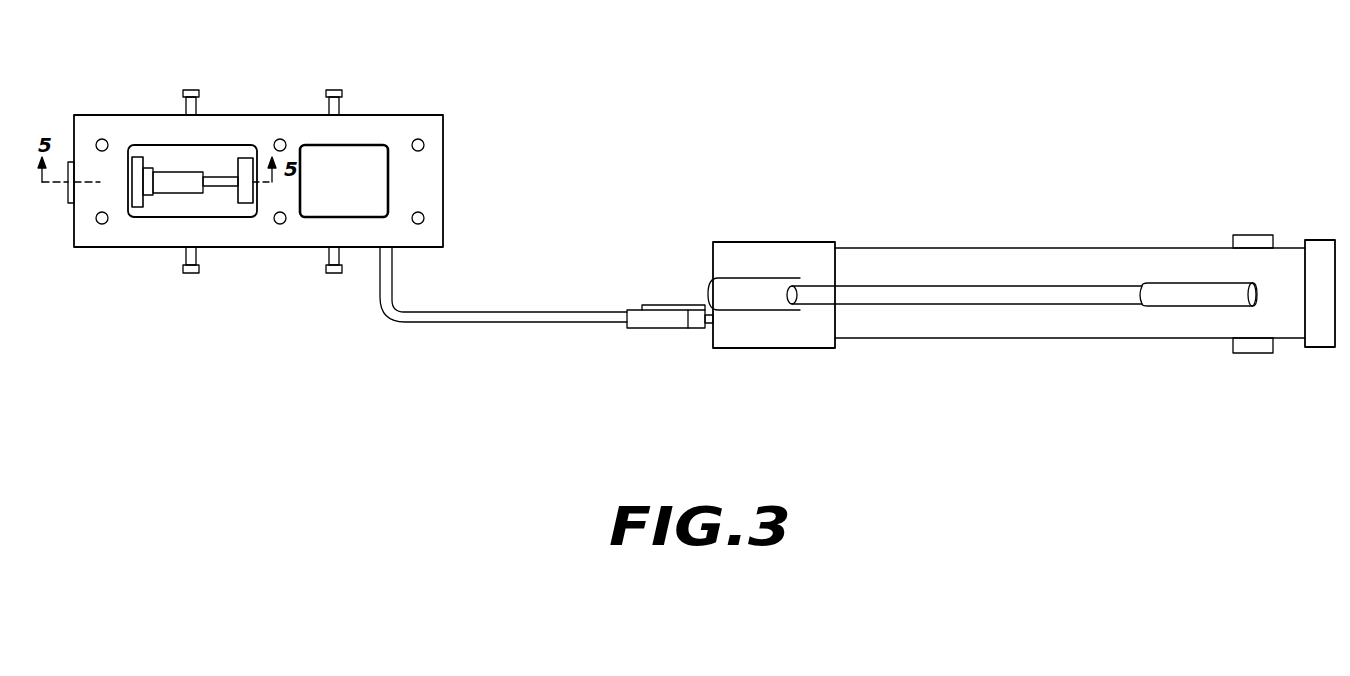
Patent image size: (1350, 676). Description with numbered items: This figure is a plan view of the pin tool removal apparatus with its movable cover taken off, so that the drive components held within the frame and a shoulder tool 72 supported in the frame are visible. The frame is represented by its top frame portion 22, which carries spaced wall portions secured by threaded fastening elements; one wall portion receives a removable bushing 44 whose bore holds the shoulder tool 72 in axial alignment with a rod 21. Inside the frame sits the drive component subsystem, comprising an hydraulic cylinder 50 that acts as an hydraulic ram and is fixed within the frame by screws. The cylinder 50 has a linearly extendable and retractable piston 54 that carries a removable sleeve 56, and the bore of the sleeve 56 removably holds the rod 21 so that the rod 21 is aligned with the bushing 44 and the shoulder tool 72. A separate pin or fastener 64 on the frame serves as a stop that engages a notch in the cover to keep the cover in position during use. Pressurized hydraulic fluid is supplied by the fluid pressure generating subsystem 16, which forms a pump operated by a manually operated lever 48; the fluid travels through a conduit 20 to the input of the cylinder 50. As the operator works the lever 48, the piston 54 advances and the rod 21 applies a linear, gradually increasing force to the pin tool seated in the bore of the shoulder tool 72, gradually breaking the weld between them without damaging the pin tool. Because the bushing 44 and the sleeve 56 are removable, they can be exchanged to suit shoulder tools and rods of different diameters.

The fluid pressure generating subsystem 16 is at (1174, 204).
The conduit 20 is at (510, 318).
The rod 21 is at (222, 187).
The top frame portion 22 is at (433, 178).
The bushing 44 is at (137, 157).
The manually operated lever 48 is at (982, 292).
The hydraulic cylinder 50 is at (352, 170).
The piston 54 is at (254, 204).
The removable sleeve 56 is at (250, 160).
The pin or fastener 64 is at (186, 90).
The shoulder tool 72 is at (165, 194).